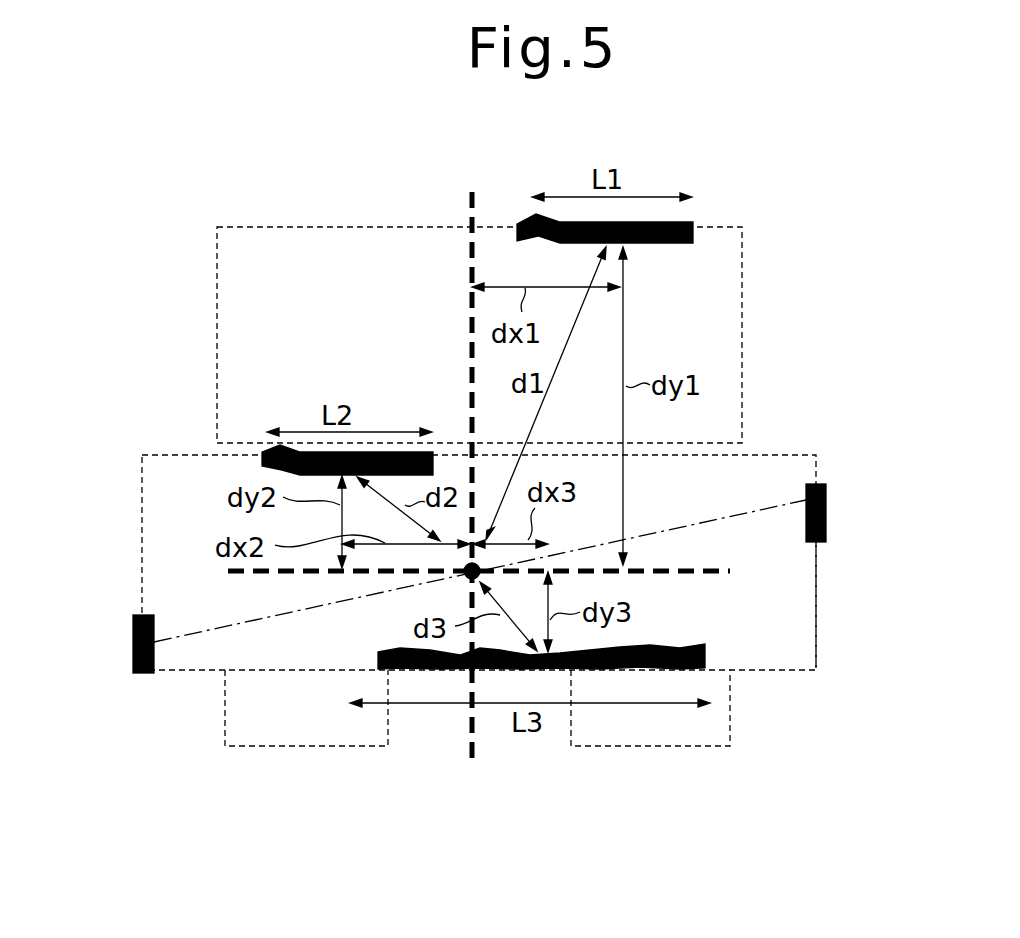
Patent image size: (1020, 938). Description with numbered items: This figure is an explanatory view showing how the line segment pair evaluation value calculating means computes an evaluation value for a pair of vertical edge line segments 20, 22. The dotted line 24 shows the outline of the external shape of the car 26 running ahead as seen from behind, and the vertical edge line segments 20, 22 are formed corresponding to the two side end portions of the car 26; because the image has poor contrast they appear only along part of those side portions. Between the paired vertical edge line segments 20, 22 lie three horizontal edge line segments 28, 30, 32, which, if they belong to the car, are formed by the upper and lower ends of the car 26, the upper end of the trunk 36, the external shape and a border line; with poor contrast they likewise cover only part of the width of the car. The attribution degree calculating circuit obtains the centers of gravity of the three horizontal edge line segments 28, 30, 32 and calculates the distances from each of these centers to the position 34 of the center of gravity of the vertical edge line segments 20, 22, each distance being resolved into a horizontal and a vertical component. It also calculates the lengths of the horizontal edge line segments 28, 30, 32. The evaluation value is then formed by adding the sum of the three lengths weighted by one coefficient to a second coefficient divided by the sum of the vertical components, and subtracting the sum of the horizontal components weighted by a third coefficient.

The vertical edge line segment 20 is at (132, 632).
The vertical edge line segment 22 is at (826, 515).
The dotted line 24 is at (742, 330).
The car 26 is at (772, 218).
The horizontal edge line segment 28 is at (648, 222).
The horizontal edge line segment 30 is at (268, 448).
The horizontal edge line segment 32 is at (597, 670).
The position of the center of gravity of the vertical edge line segments 34 is at (466, 578).
The trunk 36 is at (797, 583).